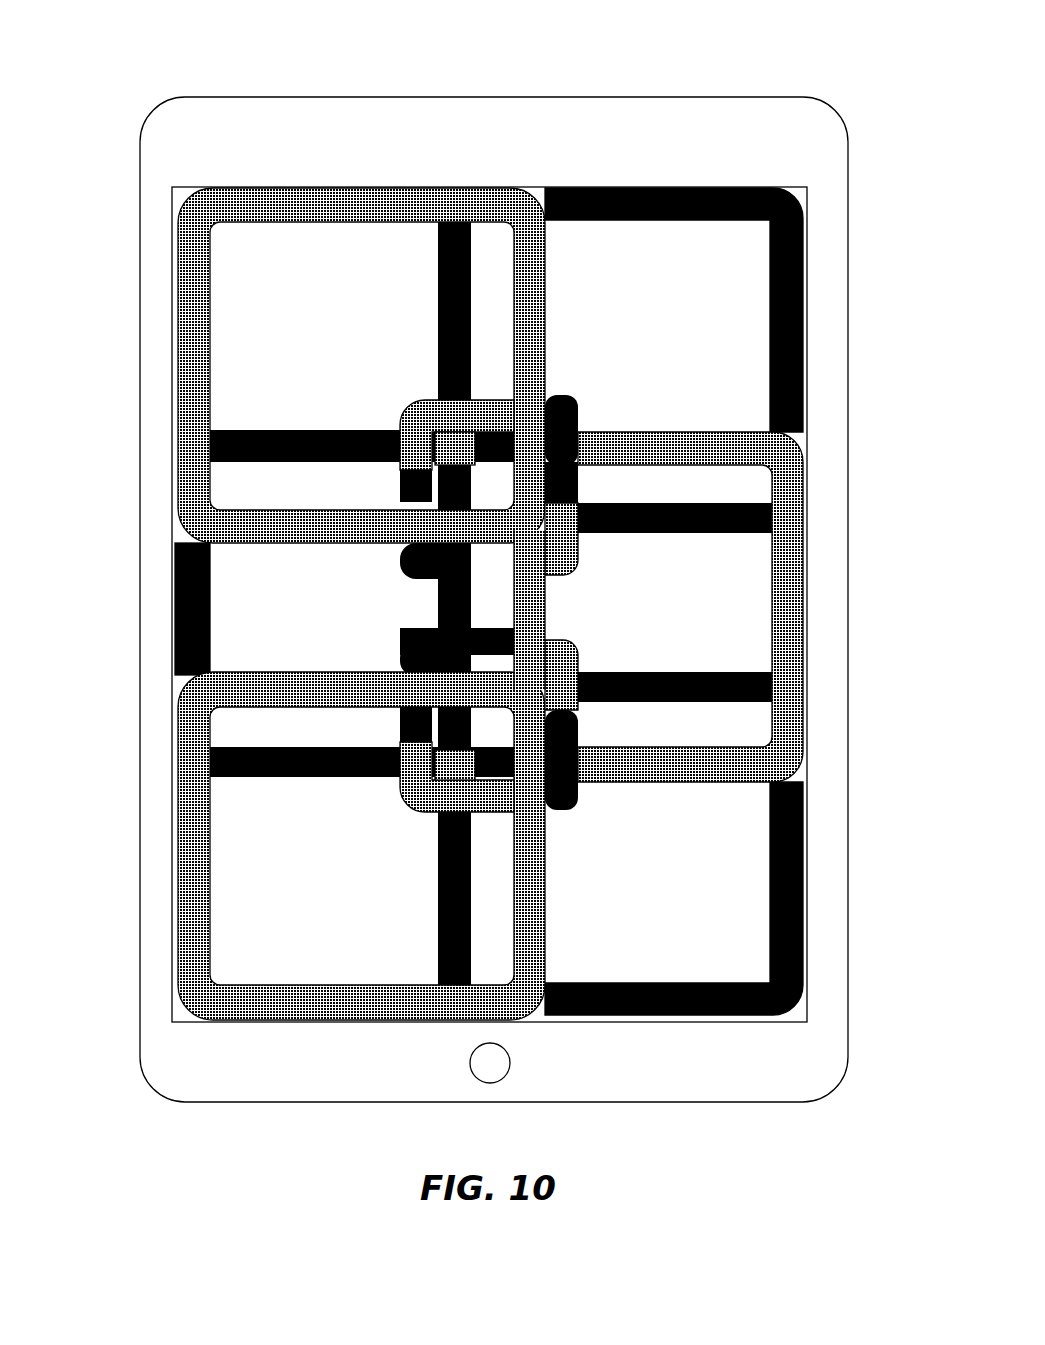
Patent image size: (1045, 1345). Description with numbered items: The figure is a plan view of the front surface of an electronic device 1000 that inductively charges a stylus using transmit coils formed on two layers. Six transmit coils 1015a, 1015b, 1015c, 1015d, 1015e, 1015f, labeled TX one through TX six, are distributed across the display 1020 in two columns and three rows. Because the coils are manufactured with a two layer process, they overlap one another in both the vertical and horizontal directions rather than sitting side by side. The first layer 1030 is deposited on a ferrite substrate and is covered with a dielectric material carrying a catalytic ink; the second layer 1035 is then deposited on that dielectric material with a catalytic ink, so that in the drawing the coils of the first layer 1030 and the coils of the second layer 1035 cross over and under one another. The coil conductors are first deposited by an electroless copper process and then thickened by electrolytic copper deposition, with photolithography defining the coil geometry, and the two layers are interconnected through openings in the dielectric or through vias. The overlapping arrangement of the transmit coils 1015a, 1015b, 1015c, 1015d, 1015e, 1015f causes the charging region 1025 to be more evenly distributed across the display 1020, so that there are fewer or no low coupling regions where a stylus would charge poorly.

The electronic device 1000 is at (762, 58).
The display 1020 is at (807, 188).
The charging region 1025 is at (307, 262).
The first layer 1030 is at (222, 207).
The second layer 1035 is at (628, 188).
The transmit coil 1015a is at (195, 275).
The transmit coil 1015b is at (807, 258).
The transmit coil 1015c is at (178, 580).
The transmit coil 1015d is at (790, 580).
The transmit coil 1015e is at (190, 810).
The transmit coil 1015f is at (807, 843).